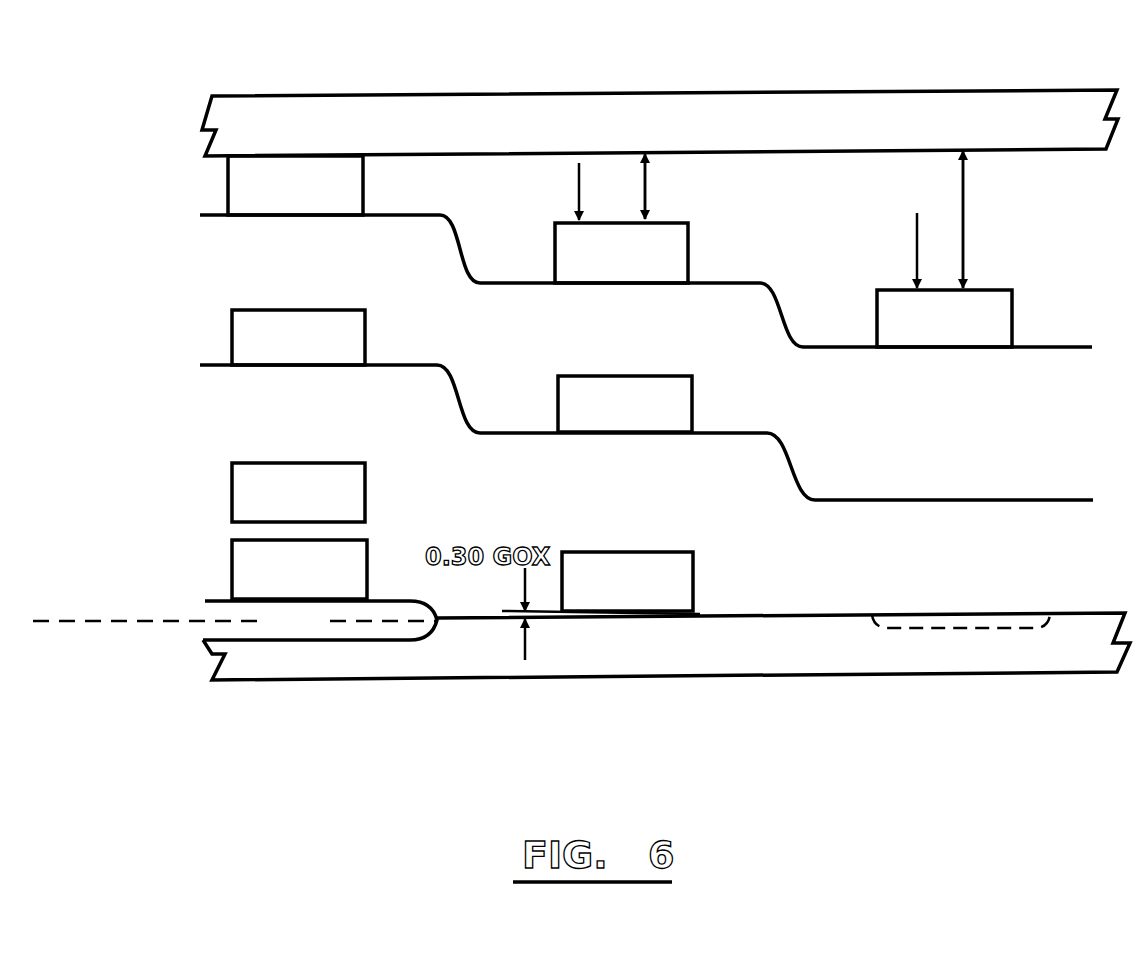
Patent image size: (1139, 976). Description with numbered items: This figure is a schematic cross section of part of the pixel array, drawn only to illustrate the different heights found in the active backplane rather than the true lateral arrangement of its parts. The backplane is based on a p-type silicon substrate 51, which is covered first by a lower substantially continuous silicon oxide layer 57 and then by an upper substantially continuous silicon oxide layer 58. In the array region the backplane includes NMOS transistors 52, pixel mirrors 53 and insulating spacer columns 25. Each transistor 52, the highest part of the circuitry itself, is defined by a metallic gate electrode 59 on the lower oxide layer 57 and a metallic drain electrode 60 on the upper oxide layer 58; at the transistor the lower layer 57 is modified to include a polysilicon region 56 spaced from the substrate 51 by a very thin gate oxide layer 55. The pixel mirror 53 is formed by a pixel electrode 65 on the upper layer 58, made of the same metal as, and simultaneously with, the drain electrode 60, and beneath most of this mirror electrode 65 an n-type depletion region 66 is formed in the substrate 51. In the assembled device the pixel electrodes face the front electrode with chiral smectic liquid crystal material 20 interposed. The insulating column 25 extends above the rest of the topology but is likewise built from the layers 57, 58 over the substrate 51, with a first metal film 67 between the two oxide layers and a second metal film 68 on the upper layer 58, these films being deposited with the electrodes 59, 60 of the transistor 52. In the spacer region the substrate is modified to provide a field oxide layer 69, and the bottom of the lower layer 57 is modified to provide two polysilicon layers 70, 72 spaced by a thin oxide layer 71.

The chiral smectic liquid crystal material 20 is at (856, 263).
The insulating spacer column 25 is at (398, 199).
The p-type silicon substrate 51 is at (816, 663).
The NMOS transistor 52 is at (612, 187).
The pixel mirror 53 is at (934, 219).
The gate oxide layer 55 is at (700, 612).
The polysilicon region 56 is at (683, 580).
The lower silicon oxide layer 57 is at (956, 571).
The upper silicon oxide layer 58 is at (950, 438).
The metallic gate electrode 59 is at (688, 378).
The metallic drain electrode 60 is at (688, 256).
The pixel electrode 65 is at (1000, 315).
The n-type depletion region 66 is at (990, 618).
The first metal film 67 is at (347, 323).
The second metal film 68 is at (329, 170).
The field oxide layer 69 is at (395, 607).
The first polysilicon layer 70 is at (373, 550).
The thin oxide layer 71 is at (363, 530).
The second polysilicon layer 72 is at (350, 483).